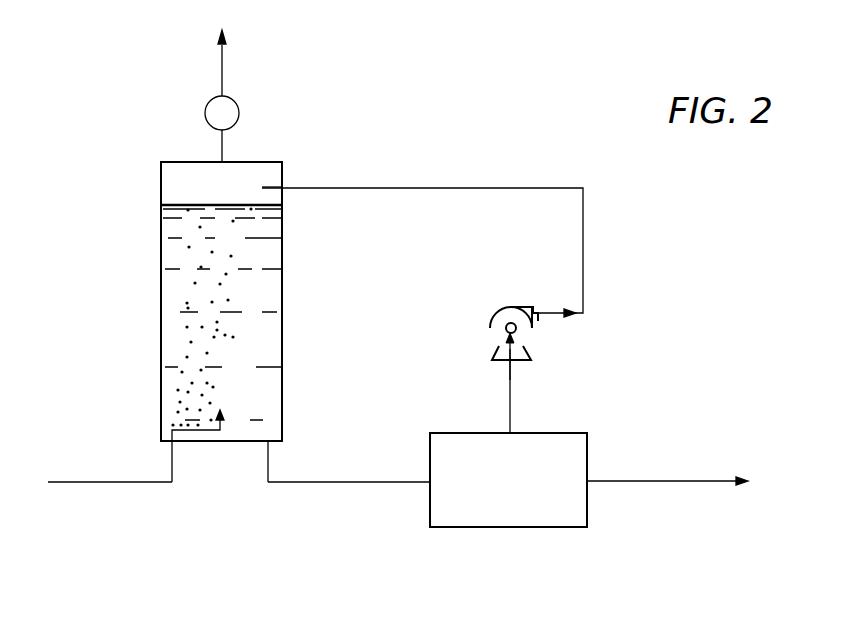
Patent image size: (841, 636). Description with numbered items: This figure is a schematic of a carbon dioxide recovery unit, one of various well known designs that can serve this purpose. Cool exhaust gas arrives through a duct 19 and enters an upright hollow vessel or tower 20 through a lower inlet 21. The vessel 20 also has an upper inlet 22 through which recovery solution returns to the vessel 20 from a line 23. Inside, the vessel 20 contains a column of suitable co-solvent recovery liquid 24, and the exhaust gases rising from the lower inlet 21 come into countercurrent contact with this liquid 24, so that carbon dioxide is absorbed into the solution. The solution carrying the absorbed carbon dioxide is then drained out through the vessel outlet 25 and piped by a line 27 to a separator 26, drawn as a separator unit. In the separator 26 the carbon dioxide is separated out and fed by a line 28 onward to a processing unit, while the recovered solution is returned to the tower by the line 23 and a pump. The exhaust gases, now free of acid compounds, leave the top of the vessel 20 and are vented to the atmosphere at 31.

The duct 19 is at (80, 484).
The upright hollow vessel or tower 20 is at (161, 257).
The lower inlet 21 is at (172, 444).
The upper inlet 22 is at (282, 186).
The line 23 is at (455, 189).
The co-solvent recovery liquid 24 is at (182, 312).
The vessel outlet 25 is at (268, 444).
The separator 26 is at (521, 528).
The line 27 is at (378, 483).
The line 28 is at (698, 483).
The vent to atmosphere 31 is at (222, 73).